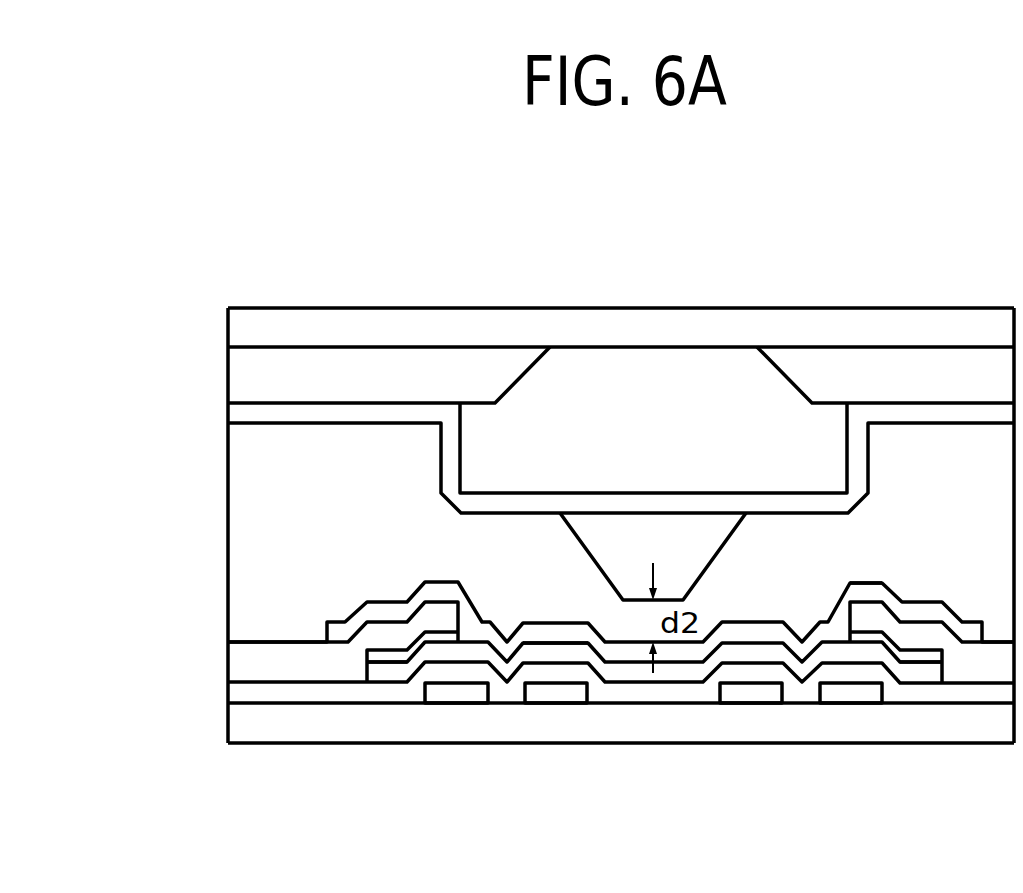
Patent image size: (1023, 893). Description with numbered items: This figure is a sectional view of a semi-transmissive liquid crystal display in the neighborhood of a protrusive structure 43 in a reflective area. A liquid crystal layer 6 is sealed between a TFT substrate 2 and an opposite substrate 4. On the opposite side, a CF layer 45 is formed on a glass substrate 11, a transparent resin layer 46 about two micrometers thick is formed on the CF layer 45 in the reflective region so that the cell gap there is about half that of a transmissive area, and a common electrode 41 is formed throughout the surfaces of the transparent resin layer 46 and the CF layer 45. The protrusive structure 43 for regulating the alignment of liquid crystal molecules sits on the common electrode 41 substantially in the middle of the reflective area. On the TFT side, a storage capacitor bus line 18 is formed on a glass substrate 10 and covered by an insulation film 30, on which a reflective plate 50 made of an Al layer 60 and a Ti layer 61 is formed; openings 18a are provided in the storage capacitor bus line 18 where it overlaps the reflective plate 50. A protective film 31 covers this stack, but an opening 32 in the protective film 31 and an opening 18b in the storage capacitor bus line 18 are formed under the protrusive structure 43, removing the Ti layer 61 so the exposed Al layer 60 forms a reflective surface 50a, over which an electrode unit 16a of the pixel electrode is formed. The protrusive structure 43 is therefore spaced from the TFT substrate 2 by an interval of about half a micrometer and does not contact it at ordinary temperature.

The TFT substrate 2 is at (300, 768).
The opposite substrate 4 is at (300, 278).
The liquid crystal layer 6 is at (250, 547).
The glass substrate 10 is at (240, 728).
The glass substrate 11 is at (240, 327).
The electrode unit 16a is at (866, 590).
The storage capacitor bus line 18 is at (457, 705).
The opening 18a is at (505, 725).
The opening 18b is at (647, 725).
The insulation film 30 is at (240, 695).
The protective film 31 is at (240, 662).
The opening 32 is at (511, 562).
The common electrode 41 is at (240, 413).
The protrusive structure 43 is at (677, 530).
The CF layer 45 is at (240, 375).
The transparent resin layer 46 is at (647, 383).
The reflective plate 50 is at (830, 653).
The reflective surface 50a is at (562, 647).
The Al layer 60 is at (920, 670).
The Ti layer 61 is at (942, 655).